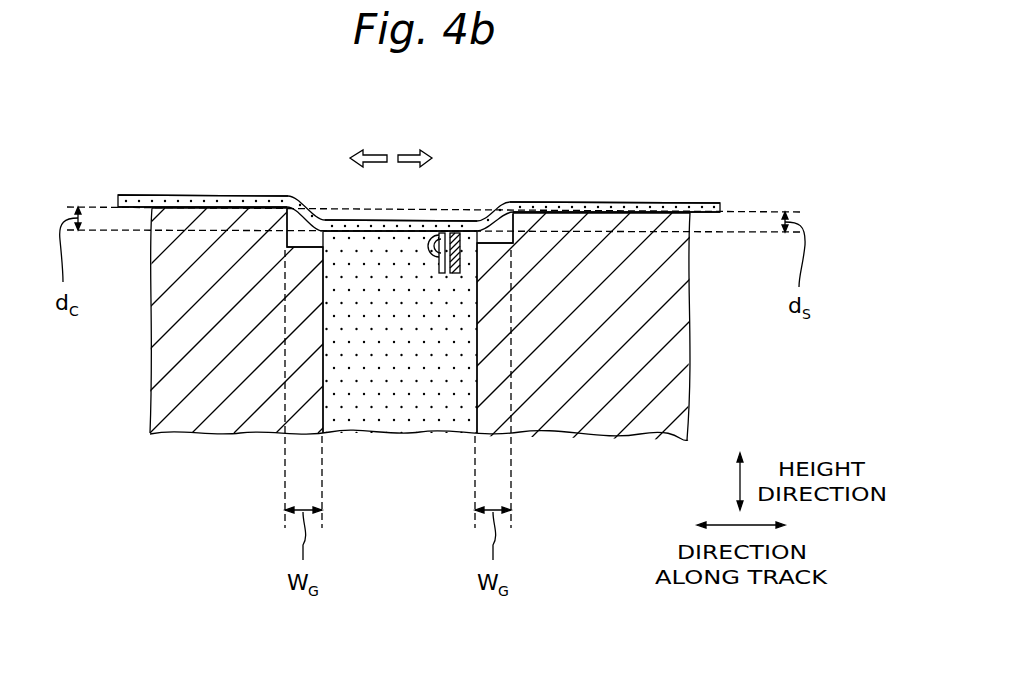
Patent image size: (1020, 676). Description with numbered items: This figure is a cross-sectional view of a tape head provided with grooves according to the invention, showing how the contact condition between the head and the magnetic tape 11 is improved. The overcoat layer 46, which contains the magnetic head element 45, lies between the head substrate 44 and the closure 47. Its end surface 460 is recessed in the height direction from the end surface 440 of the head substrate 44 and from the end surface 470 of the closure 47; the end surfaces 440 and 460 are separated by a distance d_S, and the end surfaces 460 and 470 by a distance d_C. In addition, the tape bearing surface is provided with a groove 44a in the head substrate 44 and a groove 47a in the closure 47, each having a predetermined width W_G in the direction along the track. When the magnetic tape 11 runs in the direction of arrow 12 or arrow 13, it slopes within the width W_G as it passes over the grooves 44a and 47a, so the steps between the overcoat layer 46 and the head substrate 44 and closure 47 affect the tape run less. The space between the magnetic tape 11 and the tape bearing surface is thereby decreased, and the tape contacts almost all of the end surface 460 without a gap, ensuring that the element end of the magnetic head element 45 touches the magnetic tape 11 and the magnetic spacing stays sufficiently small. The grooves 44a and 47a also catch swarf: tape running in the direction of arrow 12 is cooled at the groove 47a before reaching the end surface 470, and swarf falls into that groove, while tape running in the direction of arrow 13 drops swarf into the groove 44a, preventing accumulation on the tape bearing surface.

The magnetic tape 11 is at (663, 208).
The arrow 12 is at (367, 153).
The arrow 13 is at (410, 154).
The head substrate 44 is at (553, 410).
The groove 44a is at (495, 237).
The end surface 440 is at (583, 208).
The magnetic head element 45 is at (452, 275).
The overcoat layer 46 is at (390, 400).
The end surface 460 is at (413, 230).
The closure 47 is at (212, 402).
The groove 47a is at (300, 235).
The end surface 470 is at (235, 207).